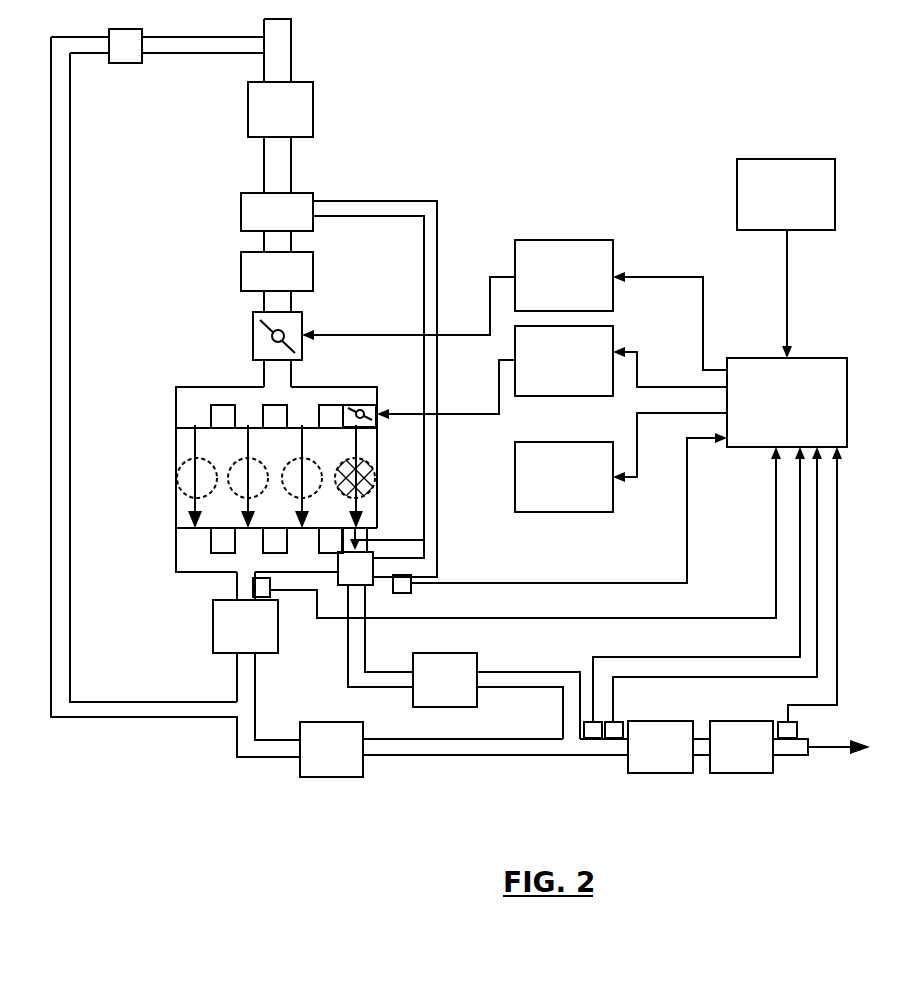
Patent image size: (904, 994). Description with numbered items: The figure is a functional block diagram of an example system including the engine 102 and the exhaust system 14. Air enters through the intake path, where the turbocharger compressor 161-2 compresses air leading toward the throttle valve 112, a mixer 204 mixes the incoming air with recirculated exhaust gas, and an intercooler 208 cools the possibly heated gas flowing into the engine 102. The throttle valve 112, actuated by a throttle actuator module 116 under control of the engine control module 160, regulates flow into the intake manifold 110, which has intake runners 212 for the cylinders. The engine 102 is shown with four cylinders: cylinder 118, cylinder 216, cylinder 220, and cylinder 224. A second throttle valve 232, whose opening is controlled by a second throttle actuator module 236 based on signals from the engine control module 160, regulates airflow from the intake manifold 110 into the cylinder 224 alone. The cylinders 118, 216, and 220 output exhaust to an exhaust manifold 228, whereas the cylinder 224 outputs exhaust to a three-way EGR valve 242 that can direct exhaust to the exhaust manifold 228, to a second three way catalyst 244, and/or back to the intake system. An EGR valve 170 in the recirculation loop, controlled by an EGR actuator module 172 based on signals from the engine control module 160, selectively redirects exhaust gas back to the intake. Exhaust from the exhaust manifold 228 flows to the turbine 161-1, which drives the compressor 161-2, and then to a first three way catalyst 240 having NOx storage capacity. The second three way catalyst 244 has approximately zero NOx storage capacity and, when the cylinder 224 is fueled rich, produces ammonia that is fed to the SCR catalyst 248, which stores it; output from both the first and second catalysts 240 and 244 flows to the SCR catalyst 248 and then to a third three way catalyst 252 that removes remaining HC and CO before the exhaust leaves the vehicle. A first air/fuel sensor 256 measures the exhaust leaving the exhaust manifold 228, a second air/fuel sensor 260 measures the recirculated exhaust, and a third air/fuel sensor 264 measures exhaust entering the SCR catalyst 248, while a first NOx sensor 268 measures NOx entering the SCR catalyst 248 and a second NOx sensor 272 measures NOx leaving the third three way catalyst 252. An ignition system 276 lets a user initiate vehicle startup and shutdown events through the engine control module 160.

The exhaust system 14 is at (784, 848).
The engine 102 is at (176, 443).
The intake manifold 110 is at (176, 405).
The throttle valve 112 is at (253, 335).
The throttle actuator module 116 is at (537, 240).
The cylinder 118 is at (185, 495).
The engine control module 160 is at (847, 367).
The turbine 161-1 is at (213, 627).
The compressor 161-2 is at (248, 108).
The exhaust gas recirculation valve 170 is at (142, 63).
The EGR actuator module 172 is at (562, 442).
The mixer 204 is at (241, 210).
The intercooler 208 is at (241, 268).
The intake runners 212 is at (193, 408).
The cylinder 216 is at (247, 458).
The cylinder 220 is at (302, 458).
The cylinder 224 is at (373, 462).
The exhaust manifold 228 is at (176, 550).
The second throttle valve 232 is at (378, 410).
The second throttle actuator module 236 is at (613, 333).
The first three way catalyst 240 is at (332, 777).
The EGR valve 242 is at (373, 578).
The second three way catalyst 244 is at (445, 707).
The SCR catalyst 248 is at (663, 773).
The third three way catalyst 252 is at (743, 773).
The first air/fuel sensor 256 is at (237, 590).
The second air/fuel sensor 260 is at (411, 586).
The third air/fuel sensor 264 is at (592, 740).
The first NOx sensor 268 is at (612, 740).
The second NOx sensor 272 is at (790, 740).
The ignition system 276 is at (835, 193).